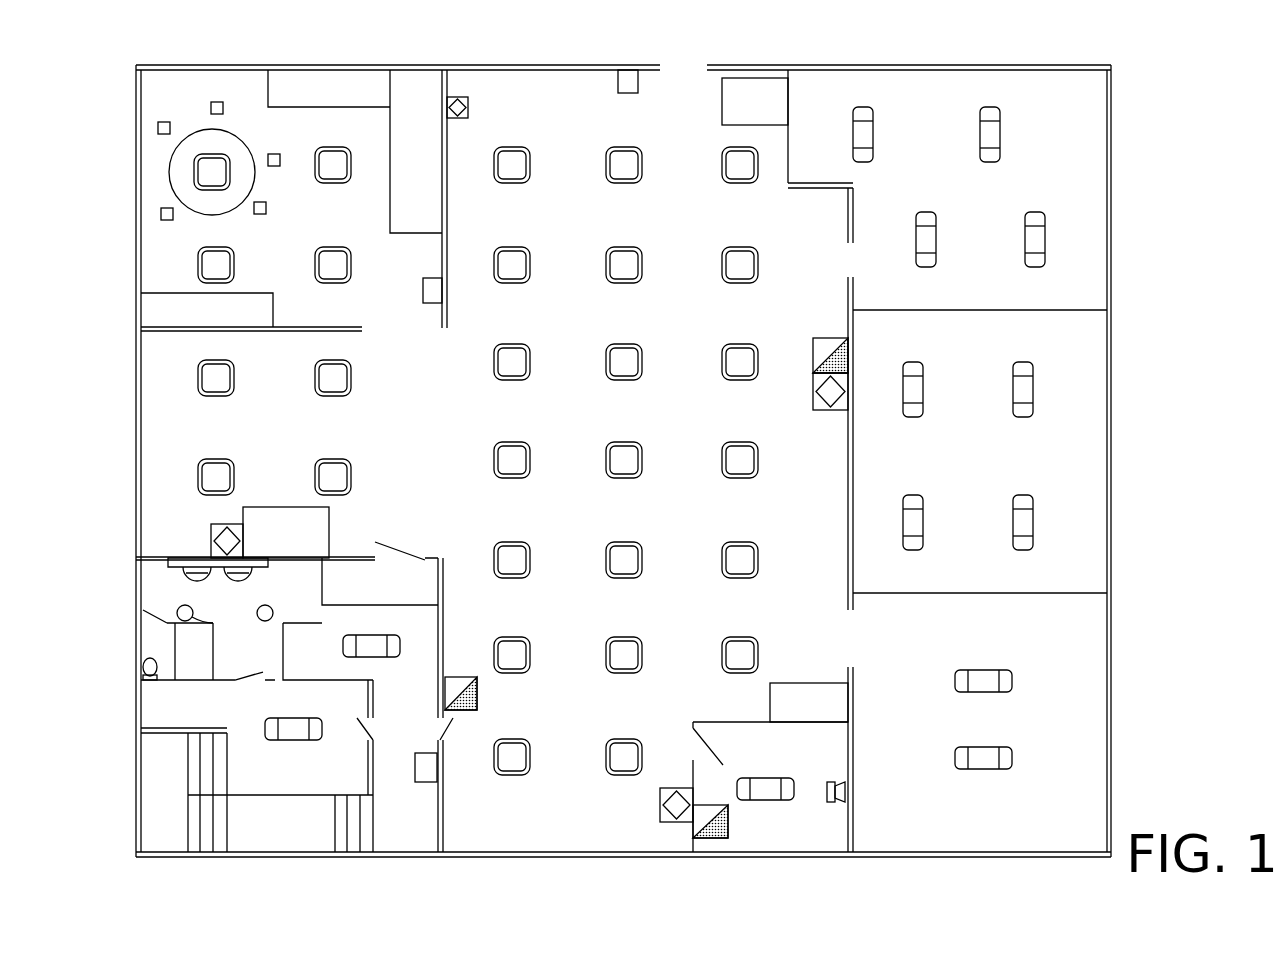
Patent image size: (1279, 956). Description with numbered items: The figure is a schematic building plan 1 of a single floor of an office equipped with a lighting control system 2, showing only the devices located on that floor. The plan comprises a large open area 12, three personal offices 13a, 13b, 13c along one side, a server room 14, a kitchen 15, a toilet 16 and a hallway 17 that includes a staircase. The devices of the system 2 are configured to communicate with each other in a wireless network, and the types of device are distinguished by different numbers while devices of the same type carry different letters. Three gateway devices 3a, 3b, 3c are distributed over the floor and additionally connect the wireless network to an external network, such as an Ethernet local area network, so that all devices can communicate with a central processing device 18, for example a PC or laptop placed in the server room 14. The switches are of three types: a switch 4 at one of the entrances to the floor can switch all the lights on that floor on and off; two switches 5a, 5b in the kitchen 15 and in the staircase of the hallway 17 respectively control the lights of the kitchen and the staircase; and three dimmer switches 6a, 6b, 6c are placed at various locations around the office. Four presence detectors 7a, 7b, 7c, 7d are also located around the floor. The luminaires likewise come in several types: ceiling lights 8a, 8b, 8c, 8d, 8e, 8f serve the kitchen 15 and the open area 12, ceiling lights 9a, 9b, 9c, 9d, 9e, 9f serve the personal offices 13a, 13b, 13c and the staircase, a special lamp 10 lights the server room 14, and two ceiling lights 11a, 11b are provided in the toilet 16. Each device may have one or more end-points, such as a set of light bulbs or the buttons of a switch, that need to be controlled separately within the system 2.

The building plan 1 is at (233, 37).
The lighting control system 2 is at (358, 46).
The gateway device 3a is at (787, 129).
The gateway device 3b is at (809, 702).
The gateway device 3c is at (286, 532).
The switch 4 is at (626, 69).
The switch 5a is at (423, 291).
The switch 5b is at (437, 770).
The dimmer switch 6a is at (477, 694).
The dimmer switch 6b is at (728, 822).
The dimmer switch 6c is at (813, 360).
The presence detector 7a is at (468, 106).
The presence detector 7b is at (830, 412).
The presence detector 7c is at (211, 540).
The presence detector 7d is at (660, 807).
The ceiling light 8a is at (628, 165).
The ceiling light 8b is at (516, 265).
The ceiling light 8c is at (628, 265).
The ceiling light 8d is at (744, 265).
The ceiling light 8e is at (216, 265).
The ceiling light 8f is at (333, 265).
The ceiling light 9a is at (932, 240).
The ceiling light 9b is at (1041, 240).
The ceiling light 9c is at (1030, 392).
The ceiling light 9d is at (1030, 524).
The ceiling light 9e is at (986, 677).
The ceiling light 9f is at (986, 752).
The special lamp 10 is at (768, 778).
The ceiling light 11a is at (190, 608).
The ceiling light 11b is at (270, 607).
The open area 12 is at (421, 492).
The personal office 13a is at (1067, 154).
The personal office 13b is at (990, 467).
The personal office 13c is at (1069, 834).
The server room 14 is at (801, 835).
The kitchen 15 is at (304, 219).
The toilet 16 is at (234, 657).
The hallway 17 is at (250, 762).
The central processing device 18 is at (838, 805).